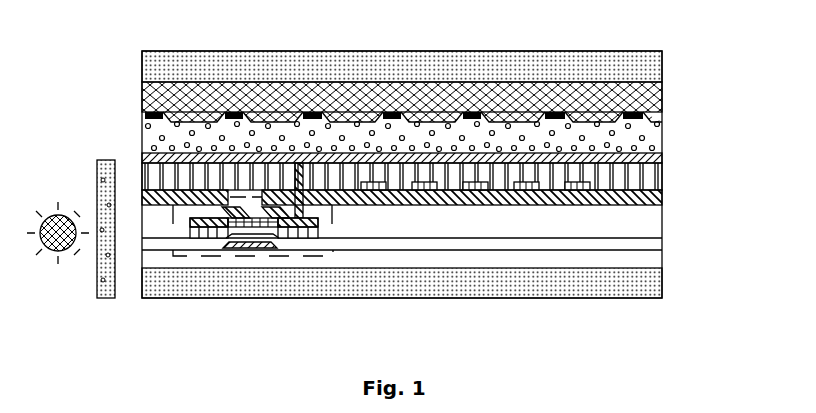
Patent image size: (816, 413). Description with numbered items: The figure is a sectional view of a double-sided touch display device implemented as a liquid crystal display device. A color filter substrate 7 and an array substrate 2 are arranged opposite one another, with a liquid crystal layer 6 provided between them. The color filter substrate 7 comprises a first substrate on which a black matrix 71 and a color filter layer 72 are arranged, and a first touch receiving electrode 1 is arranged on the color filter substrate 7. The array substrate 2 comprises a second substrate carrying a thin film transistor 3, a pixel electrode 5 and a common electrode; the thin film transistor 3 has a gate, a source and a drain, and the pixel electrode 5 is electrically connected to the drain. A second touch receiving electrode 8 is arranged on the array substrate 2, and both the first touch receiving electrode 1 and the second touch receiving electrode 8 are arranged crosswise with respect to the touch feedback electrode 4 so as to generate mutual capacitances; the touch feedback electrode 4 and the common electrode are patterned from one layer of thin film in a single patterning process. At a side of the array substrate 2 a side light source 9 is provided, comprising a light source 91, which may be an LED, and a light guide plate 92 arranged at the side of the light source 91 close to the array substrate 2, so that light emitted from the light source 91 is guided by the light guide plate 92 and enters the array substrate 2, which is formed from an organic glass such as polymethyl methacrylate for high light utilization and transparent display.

The first touch receiving electrode 1 is at (653, 70).
The array substrate 2 is at (668, 153).
The thin film transistor 3 is at (310, 255).
The touch feedback electrode 4 is at (653, 183).
The pixel electrode 5 is at (655, 158).
The liquid crystal layer 6 is at (653, 135).
The color filter substrate 7 is at (420, 67).
The black matrix 71 is at (637, 108).
The color filter layer 72 is at (530, 98).
The second touch receiving electrode 8 is at (653, 285).
The side light source 9 is at (71, 220).
The light source 91 is at (53, 214).
The light guide plate 92 is at (100, 160).